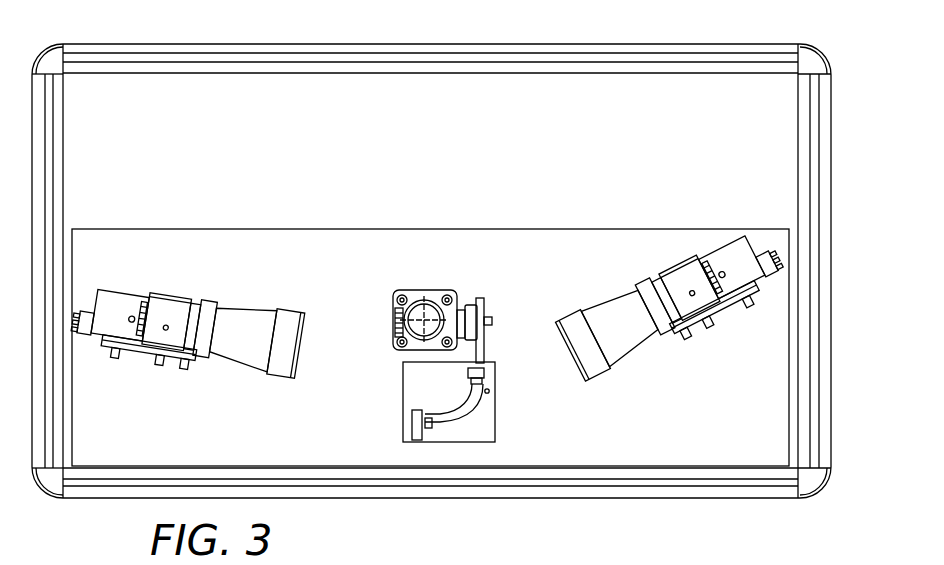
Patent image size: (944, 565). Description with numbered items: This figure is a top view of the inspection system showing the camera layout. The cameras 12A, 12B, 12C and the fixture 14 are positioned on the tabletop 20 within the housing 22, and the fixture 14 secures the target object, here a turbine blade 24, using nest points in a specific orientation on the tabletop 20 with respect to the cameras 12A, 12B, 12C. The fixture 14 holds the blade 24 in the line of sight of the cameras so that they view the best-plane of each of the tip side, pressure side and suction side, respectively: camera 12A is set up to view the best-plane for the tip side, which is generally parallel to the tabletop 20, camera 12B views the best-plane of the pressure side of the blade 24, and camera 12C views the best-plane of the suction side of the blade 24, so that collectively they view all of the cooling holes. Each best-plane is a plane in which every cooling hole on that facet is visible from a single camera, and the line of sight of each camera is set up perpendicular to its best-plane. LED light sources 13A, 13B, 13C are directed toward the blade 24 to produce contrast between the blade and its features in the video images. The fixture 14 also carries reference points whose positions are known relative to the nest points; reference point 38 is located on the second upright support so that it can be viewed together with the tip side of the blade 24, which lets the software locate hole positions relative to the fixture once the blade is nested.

The camera 12A is at (433, 312).
The camera 12B is at (241, 330).
The camera 12C is at (591, 330).
The LED light source 13A is at (393, 316).
The LED light source 13B is at (213, 303).
The LED light source 13C is at (640, 293).
The fixture 14 is at (486, 429).
The tabletop 20 is at (731, 443).
The housing 22 is at (823, 133).
The turbine blade 24 is at (415, 410).
The reference point 38 is at (489, 390).